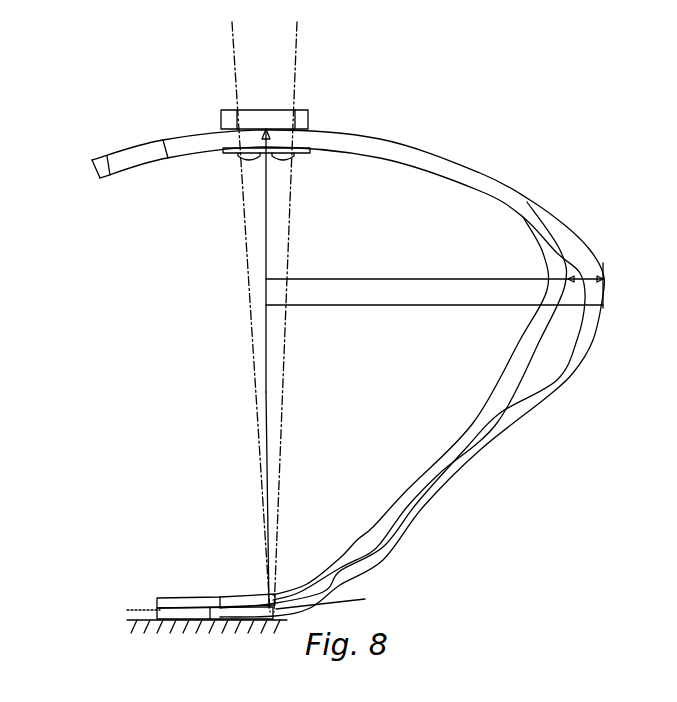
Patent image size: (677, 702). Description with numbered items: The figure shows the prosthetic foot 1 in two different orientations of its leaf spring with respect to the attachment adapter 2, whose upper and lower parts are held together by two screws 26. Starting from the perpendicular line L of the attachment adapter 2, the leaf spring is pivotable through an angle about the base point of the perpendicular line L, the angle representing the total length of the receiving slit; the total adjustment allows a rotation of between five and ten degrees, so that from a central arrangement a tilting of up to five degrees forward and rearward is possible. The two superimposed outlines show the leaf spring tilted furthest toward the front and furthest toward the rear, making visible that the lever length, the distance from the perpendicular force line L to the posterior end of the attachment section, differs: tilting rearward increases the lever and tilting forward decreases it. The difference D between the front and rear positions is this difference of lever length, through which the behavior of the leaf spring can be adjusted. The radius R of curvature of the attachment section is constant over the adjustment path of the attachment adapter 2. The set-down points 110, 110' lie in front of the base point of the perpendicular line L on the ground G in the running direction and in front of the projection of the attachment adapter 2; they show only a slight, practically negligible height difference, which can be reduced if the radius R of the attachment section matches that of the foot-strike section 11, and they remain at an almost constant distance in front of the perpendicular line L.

The prosthetic foot 1 is at (577, 188).
The attachment adapter 2 is at (320, 102).
The screws 26 is at (240, 158).
The foot-strike section 11 is at (233, 587).
The set-down point 110 is at (207, 634).
The set-down point 110' is at (194, 632).
The radius of curvature R is at (266, 210).
The perpendicular line L is at (263, 350).
The difference D is at (587, 276).
The ground line G is at (340, 603).